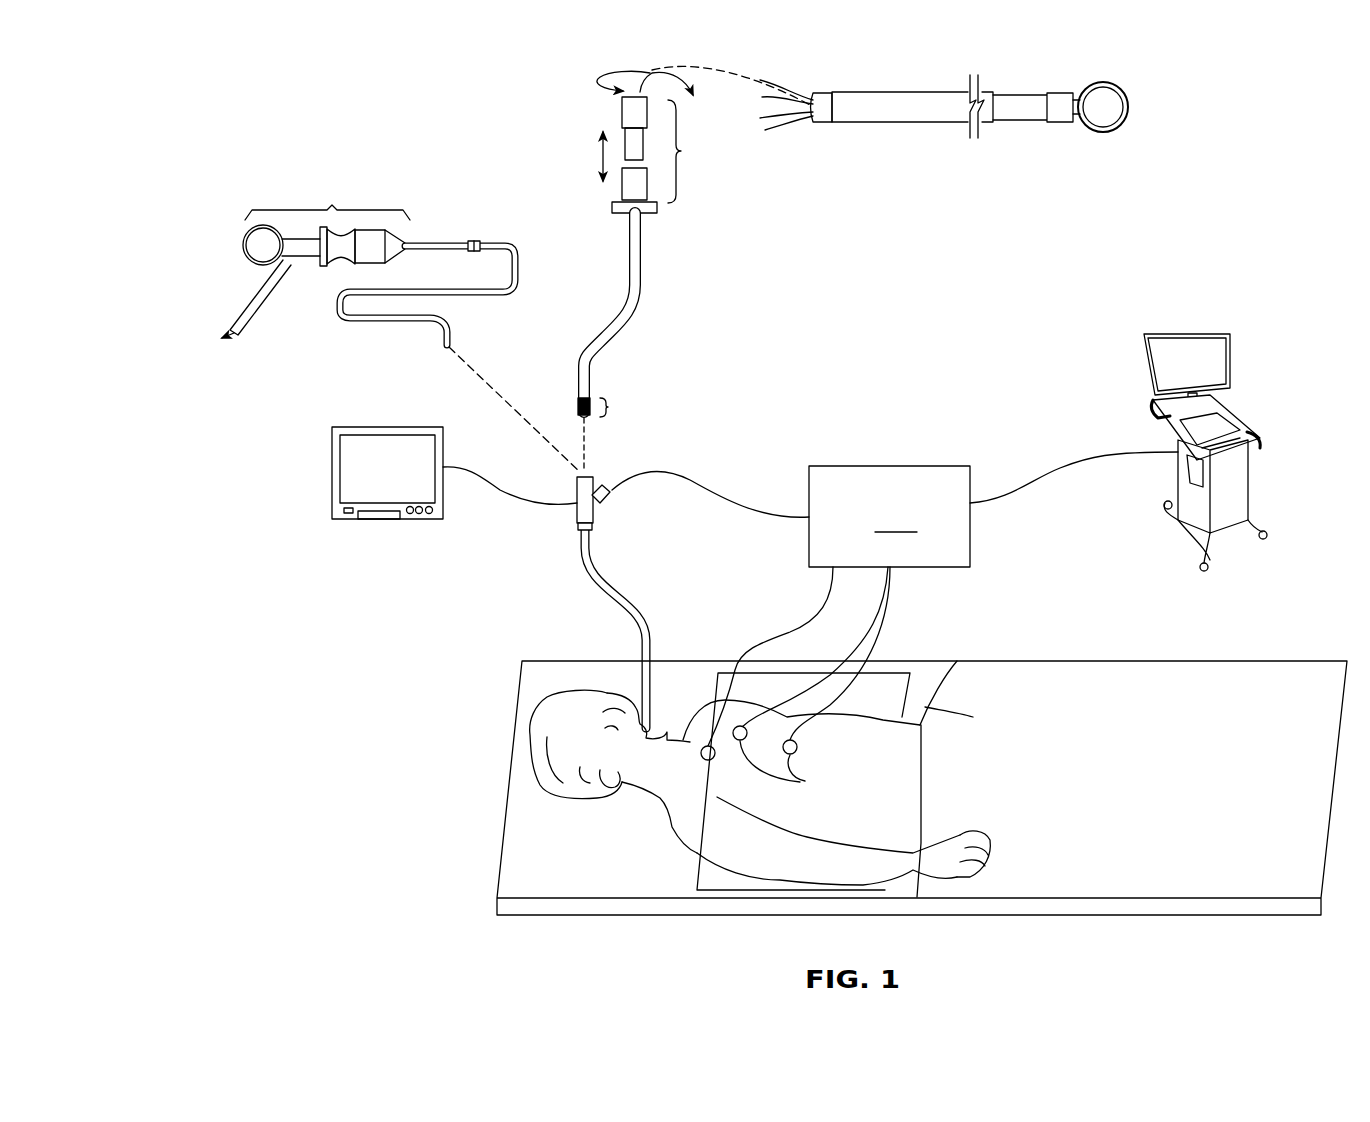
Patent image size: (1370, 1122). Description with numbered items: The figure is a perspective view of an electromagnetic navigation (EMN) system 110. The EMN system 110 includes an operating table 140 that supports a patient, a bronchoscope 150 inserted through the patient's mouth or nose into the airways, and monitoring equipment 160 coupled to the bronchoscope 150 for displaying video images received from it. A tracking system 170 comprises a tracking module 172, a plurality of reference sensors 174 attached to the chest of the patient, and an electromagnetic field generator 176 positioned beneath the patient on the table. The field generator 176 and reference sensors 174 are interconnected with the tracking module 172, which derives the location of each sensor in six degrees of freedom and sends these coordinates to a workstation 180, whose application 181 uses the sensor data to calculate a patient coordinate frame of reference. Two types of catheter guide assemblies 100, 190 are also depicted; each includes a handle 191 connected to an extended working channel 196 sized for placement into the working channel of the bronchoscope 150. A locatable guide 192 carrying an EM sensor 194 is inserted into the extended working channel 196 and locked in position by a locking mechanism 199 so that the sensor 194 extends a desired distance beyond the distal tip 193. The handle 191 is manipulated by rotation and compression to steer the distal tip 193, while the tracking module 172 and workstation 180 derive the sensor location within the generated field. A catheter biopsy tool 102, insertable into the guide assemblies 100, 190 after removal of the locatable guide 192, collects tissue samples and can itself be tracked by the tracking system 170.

The catheter guide assembly 100 is at (660, 255).
The catheter biopsy tool 102 is at (1136, 90).
The EMN system 110 is at (1208, 265).
The operating table 140 is at (510, 837).
The bronchoscope 150 is at (592, 578).
The monitoring equipment 160 is at (350, 520).
The tracking system 170 is at (895, 474).
The tracking module 172 is at (889, 516).
The reference sensors 174 is at (715, 760).
The electromagnetic field generator 176 is at (715, 885).
The workstation 180 is at (1247, 452).
The application 181 is at (1231, 358).
The catheter guide assembly 190 is at (247, 180).
The handle 191 is at (516, 202).
The locatable guide 192 is at (592, 368).
The distal tip 193 is at (578, 405).
The EM sensor 194 is at (449, 343).
The extended working channel 196 is at (645, 300).
The locking mechanism 199 is at (480, 241).